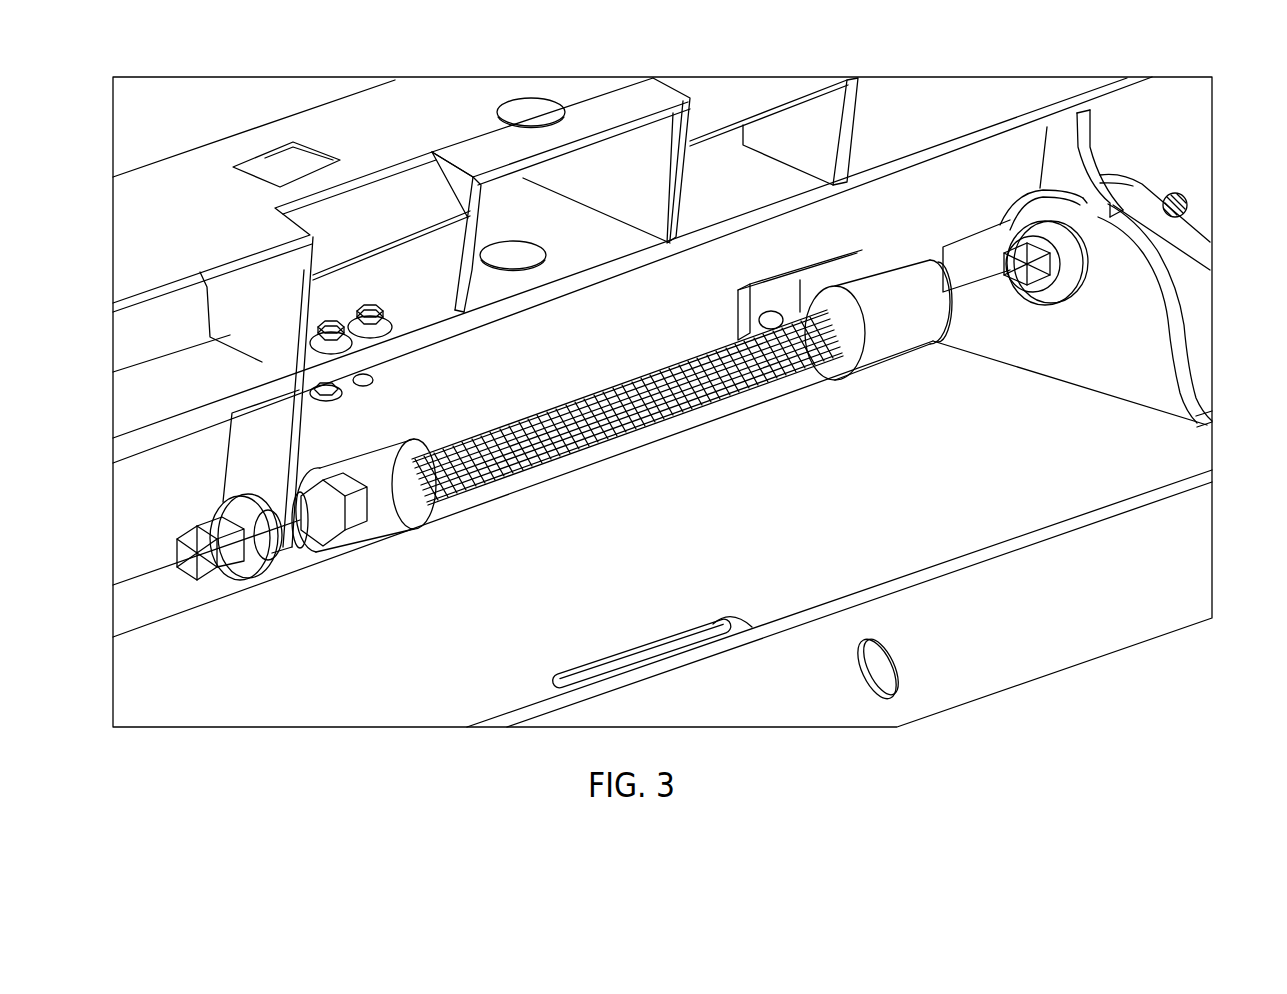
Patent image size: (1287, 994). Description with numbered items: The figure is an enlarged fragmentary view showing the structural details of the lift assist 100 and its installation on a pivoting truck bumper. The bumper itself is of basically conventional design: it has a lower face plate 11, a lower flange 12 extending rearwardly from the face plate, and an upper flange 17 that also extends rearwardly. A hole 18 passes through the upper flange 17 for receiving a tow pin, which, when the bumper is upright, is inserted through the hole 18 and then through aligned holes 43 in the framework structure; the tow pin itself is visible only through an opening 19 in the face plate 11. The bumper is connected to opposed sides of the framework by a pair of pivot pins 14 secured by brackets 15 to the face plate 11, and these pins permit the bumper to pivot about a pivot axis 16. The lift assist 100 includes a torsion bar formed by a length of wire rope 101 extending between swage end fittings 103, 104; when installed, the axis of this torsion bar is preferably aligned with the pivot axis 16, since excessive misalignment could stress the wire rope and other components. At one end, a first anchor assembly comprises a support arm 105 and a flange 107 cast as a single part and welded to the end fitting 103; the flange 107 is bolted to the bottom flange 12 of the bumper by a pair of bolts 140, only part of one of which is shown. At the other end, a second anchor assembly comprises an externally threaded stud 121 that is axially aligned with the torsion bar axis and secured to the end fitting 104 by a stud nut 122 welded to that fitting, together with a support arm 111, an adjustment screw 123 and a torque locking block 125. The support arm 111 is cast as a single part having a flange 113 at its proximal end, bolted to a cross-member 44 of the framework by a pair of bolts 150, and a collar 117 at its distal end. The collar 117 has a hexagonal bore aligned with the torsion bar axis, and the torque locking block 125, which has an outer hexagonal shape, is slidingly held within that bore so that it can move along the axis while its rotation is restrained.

The lower face plate 11 is at (1117, 433).
The lower flange 12 is at (710, 412).
The pivot pins 14 is at (1033, 290).
The brackets 15 is at (1073, 337).
The pivot axis 16 is at (977, 287).
The upper flange 17 is at (1090, 612).
The hole 18 is at (873, 670).
The opening 19 is at (683, 645).
The aligned holes 43 is at (512, 262).
The cross-member 44 is at (405, 318).
The lift assist 100 is at (468, 608).
The wire rope 101 is at (597, 388).
The swage end fitting 103 is at (883, 353).
The swage end fitting 104 is at (390, 523).
The support arm 105 is at (940, 264).
The flange 107 is at (737, 335).
The support arm 111 is at (243, 477).
The flange 113 is at (370, 372).
The collar 117 is at (274, 550).
The externally threaded stud 121 is at (333, 525).
The stud nut 122 is at (353, 540).
The adjustment screw 123 is at (190, 565).
The torque locking block 125 is at (250, 553).
The bolts 140 is at (757, 322).
The bolts 150 is at (333, 325).